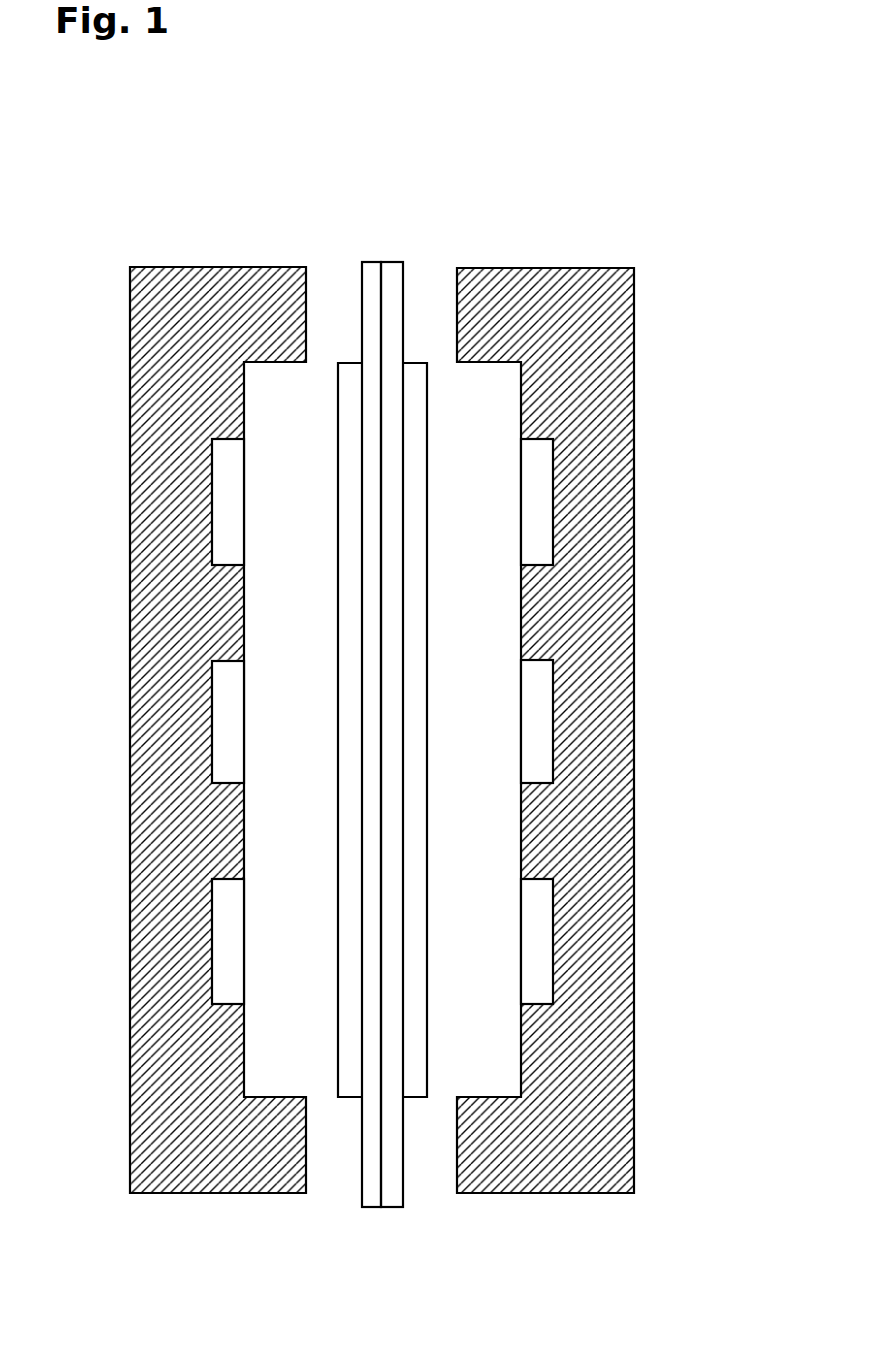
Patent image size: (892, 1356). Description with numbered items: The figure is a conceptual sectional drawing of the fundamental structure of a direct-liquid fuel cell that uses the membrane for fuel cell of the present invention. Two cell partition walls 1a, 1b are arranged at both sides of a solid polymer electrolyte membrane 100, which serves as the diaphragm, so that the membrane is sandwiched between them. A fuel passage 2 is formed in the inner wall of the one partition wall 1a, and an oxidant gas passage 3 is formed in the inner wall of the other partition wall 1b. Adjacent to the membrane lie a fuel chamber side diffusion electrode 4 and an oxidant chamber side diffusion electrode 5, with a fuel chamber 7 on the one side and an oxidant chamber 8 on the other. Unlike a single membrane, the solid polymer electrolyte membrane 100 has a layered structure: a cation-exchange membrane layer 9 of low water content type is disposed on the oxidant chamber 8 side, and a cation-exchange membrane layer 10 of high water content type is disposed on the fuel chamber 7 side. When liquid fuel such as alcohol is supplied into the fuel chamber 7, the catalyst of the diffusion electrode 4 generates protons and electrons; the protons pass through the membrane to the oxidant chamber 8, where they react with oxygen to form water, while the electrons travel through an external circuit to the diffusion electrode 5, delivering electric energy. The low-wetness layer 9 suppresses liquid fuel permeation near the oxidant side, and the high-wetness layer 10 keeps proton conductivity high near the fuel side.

The solid polymer electrolyte membrane 100 is at (390, 237).
The partition wall 1a is at (148, 393).
The partition wall 1b is at (617, 353).
The fuel passage 2 is at (223, 716).
The oxidant gas passage 3 is at (537, 707).
The fuel chamber side diffusion electrode 4 is at (350, 1083).
The oxidant chamber side diffusion electrode 5 is at (417, 1090).
The fuel chamber 7 is at (258, 848).
The oxidant chamber 8 is at (503, 848).
The cation-exchange membrane layer of low water content type 9 is at (388, 280).
The cation-exchange membrane layer of high water content type 10 is at (366, 277).